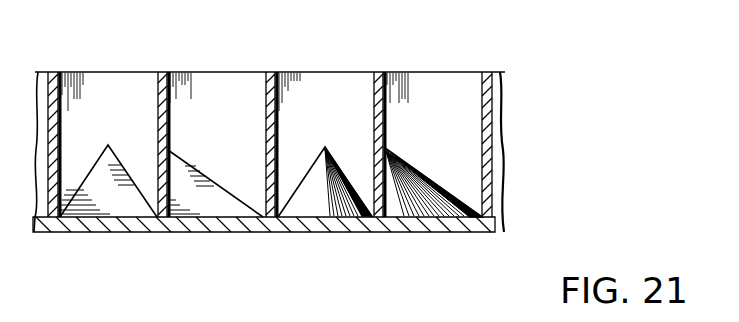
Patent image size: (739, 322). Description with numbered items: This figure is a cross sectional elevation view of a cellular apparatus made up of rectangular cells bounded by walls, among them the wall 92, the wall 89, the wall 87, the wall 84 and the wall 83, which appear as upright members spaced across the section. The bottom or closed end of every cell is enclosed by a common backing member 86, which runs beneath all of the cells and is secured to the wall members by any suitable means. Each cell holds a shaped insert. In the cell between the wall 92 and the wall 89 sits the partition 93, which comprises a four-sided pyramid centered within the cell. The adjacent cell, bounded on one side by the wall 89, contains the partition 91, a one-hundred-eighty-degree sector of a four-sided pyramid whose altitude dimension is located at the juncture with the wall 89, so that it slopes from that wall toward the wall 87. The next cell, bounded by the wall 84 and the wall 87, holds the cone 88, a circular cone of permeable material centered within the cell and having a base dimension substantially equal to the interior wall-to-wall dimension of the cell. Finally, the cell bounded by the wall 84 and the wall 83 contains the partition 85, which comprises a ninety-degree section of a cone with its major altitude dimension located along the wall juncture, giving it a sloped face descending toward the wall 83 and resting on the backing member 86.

The wall 83 is at (485, 72).
The wall 84 is at (378, 72).
The partition 85 is at (423, 172).
The common backing member 86 is at (300, 233).
The wall 87 is at (270, 72).
The cone 88 is at (318, 147).
The wall 89 is at (162, 72).
The partition 91 is at (192, 157).
The wall 92 is at (50, 72).
The partition 93 is at (101, 146).